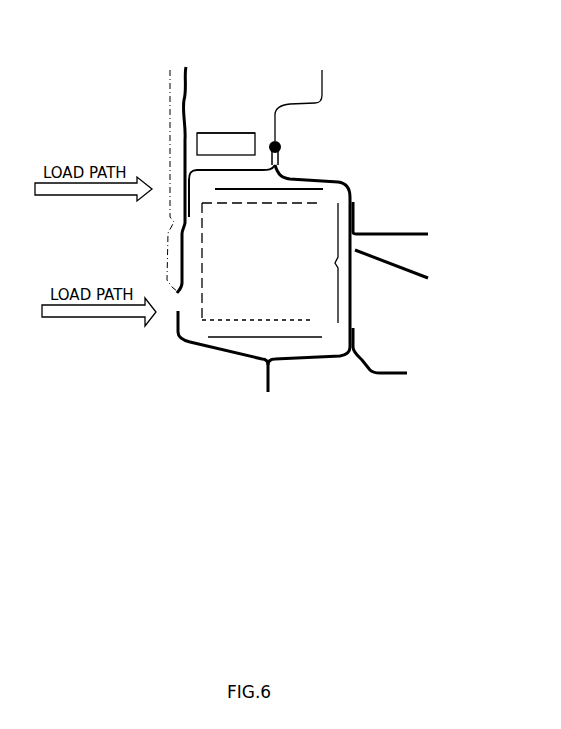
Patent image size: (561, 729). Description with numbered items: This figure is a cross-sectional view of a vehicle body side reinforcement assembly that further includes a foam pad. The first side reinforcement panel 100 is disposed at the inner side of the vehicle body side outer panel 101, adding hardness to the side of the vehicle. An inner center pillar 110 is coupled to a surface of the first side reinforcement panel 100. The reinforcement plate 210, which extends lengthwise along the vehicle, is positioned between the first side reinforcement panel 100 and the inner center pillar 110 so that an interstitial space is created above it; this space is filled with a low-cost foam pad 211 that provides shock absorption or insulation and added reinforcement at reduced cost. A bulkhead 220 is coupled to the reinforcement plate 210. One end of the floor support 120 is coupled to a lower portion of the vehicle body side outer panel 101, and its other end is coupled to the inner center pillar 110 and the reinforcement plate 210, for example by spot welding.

The first side reinforcement panel 100 is at (186, 70).
The vehicle body side outer panel 101 is at (168, 121).
The inner center pillar 110 is at (322, 78).
The floor support 120 is at (350, 305).
The reinforcement plate 210 is at (218, 157).
The foam pad 211 is at (243, 133).
The bulkhead 220 is at (340, 223).